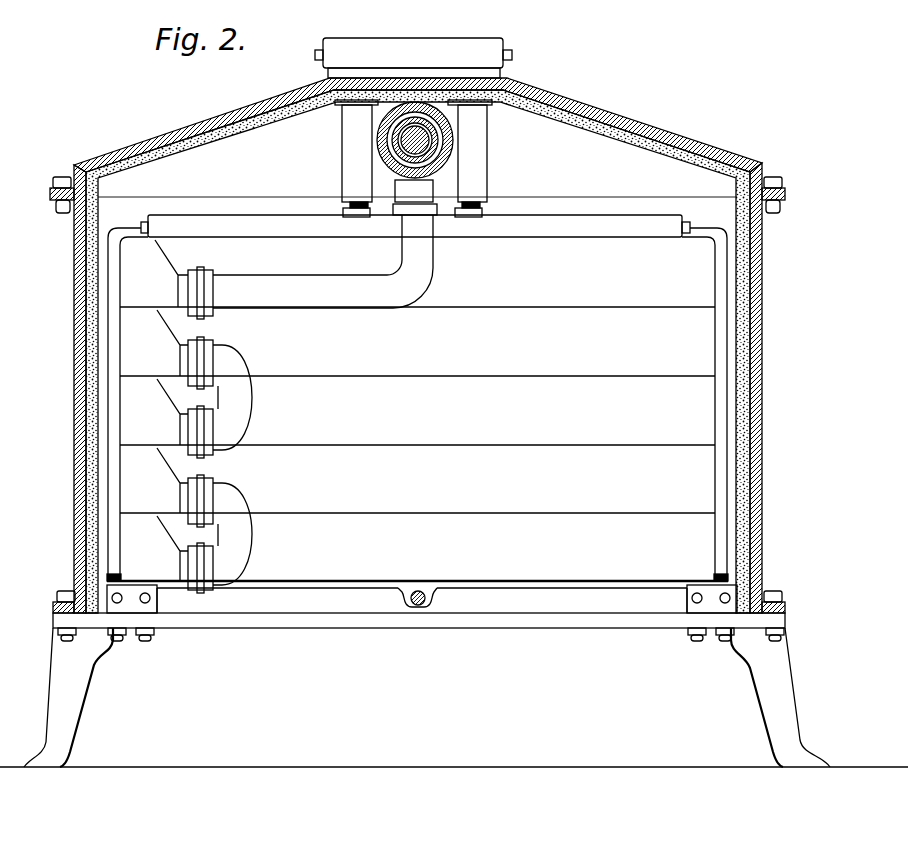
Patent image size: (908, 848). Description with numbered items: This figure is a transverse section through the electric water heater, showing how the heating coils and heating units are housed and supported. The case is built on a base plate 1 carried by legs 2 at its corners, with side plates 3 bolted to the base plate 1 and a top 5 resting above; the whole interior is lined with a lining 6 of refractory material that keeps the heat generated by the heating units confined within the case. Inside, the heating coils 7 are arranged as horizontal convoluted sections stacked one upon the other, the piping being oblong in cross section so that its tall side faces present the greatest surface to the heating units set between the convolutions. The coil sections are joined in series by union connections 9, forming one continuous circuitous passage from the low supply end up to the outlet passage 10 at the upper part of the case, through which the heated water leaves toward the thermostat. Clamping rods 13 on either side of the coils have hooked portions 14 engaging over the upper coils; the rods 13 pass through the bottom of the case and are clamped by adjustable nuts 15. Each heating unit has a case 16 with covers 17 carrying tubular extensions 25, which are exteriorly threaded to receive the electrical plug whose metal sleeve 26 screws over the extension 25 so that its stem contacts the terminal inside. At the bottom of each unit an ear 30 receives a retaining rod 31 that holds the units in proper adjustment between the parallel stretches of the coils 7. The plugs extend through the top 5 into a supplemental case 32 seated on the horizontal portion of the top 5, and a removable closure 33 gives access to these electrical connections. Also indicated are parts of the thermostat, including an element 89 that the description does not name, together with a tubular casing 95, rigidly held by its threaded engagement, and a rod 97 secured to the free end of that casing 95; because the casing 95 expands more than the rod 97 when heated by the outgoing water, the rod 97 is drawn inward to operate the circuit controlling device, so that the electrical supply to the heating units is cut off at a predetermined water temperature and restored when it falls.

The base plate 1 is at (410, 620).
The legs 2 is at (427, 697).
The side plates 3 is at (76, 290).
The top 5 is at (232, 114).
The lining 6 is at (207, 128).
The heating coils 7 is at (417, 416).
The union connections 9 is at (232, 465).
The outlet passage 10 is at (325, 244).
The clamping rods 13 is at (113, 324).
The hooked portions 14 is at (131, 228).
The adjustable nuts 15 is at (150, 601).
The case 16 is at (422, 600).
The covers 17 is at (562, 224).
The tubular extensions 25 is at (347, 212).
The metal sleeve 26 is at (413, 151).
The ear 30 is at (404, 597).
The retaining rod 31 is at (422, 604).
The supplemental case 32 is at (503, 73).
The removable closure 33 is at (413, 53).
The ring 89 is at (384, 153).
The tubular casing 95 is at (378, 137).
The rod 97 is at (397, 172).